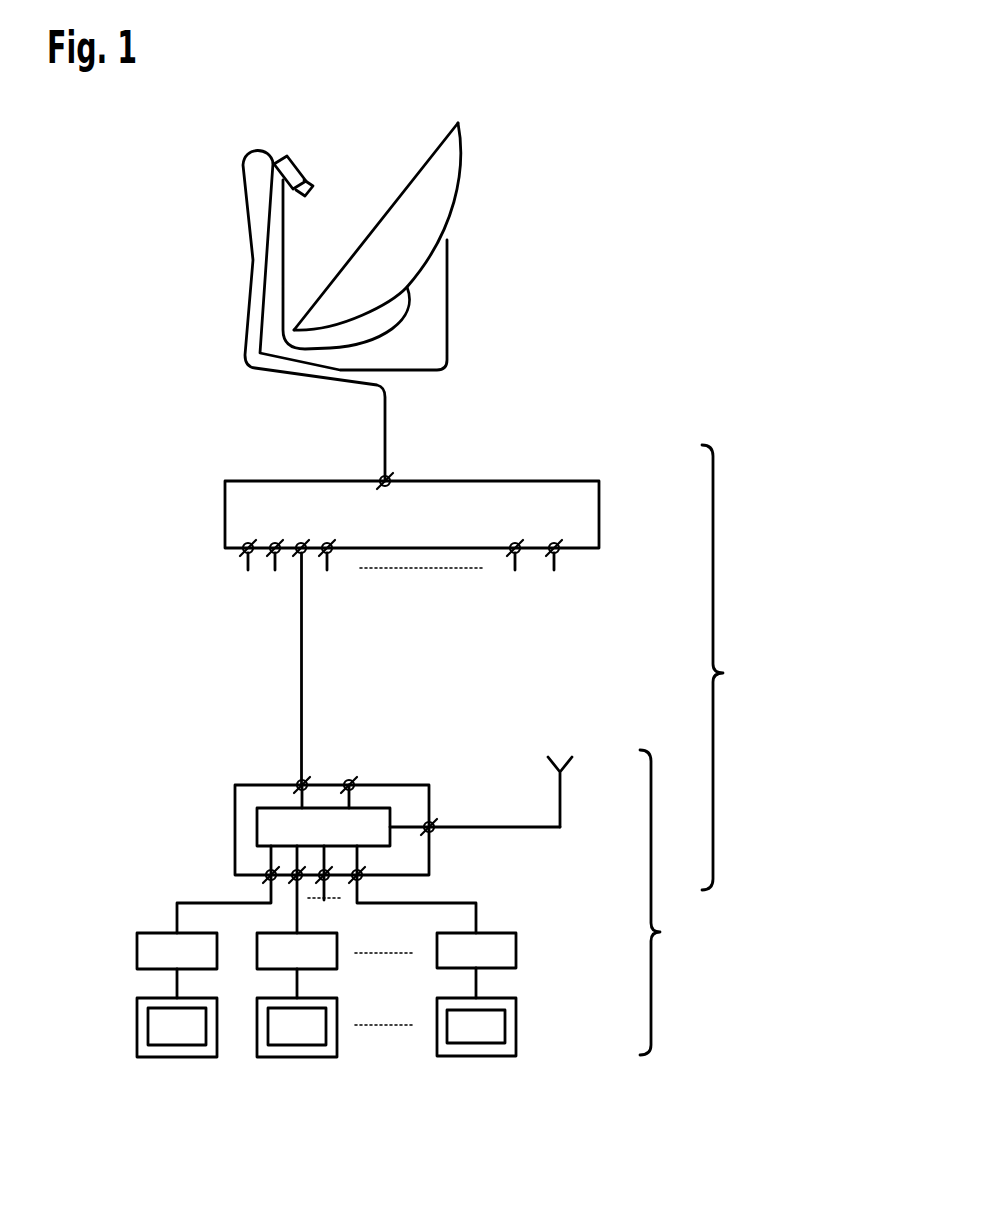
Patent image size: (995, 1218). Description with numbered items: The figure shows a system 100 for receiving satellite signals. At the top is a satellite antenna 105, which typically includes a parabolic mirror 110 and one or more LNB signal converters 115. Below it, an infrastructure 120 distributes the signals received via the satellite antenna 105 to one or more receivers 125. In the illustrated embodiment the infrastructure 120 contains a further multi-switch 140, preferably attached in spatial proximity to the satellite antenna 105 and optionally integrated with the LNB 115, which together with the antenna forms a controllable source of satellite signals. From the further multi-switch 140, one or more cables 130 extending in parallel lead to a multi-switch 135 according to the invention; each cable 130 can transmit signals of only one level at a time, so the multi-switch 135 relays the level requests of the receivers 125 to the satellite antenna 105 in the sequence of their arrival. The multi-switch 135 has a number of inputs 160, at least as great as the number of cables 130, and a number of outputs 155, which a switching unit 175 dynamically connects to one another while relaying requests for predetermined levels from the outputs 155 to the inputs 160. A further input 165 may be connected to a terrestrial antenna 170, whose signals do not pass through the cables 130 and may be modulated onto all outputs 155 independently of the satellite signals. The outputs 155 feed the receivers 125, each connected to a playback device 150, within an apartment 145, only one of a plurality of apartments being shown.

The system 100 is at (662, 103).
The satellite antenna 105 is at (512, 152).
The parabolic mirror 110 is at (463, 207).
The LNB 115 is at (288, 162).
The infrastructure 120 is at (738, 667).
The receiver 125 is at (517, 948).
The cable 130 is at (300, 657).
The multi-switch 135 is at (235, 798).
The further multi-switch 140 is at (225, 510).
The apartment 145 is at (676, 902).
The playback device 150 is at (517, 1025).
The output 155 is at (360, 880).
The input 160 is at (349, 782).
The further input 165 is at (430, 825).
The terrestrial antenna 170 is at (565, 742).
The switching unit 175 is at (257, 827).